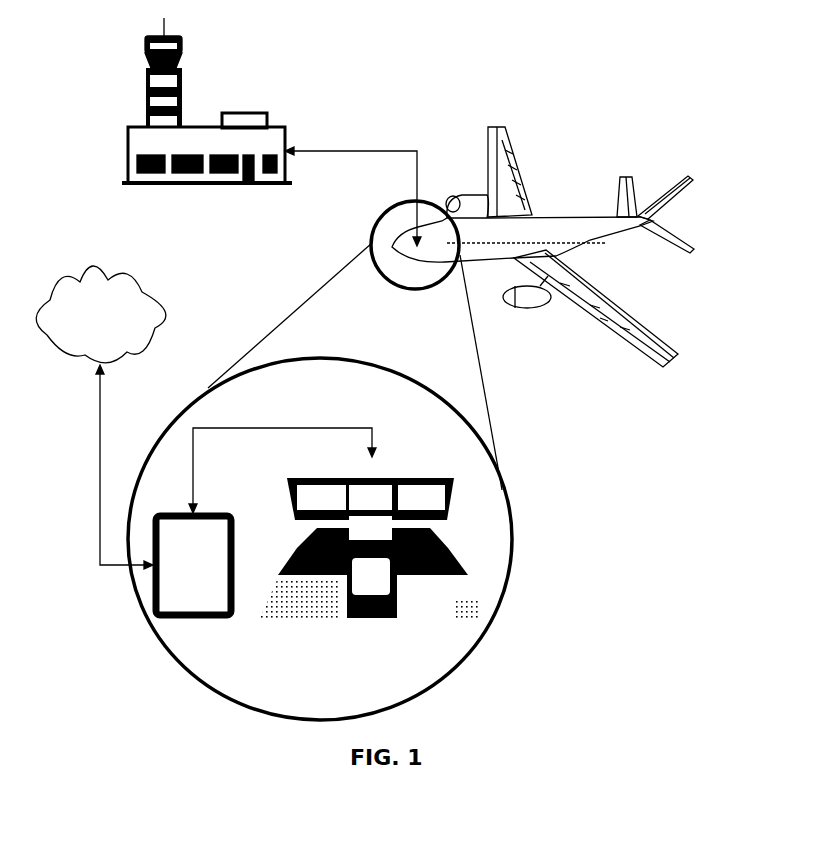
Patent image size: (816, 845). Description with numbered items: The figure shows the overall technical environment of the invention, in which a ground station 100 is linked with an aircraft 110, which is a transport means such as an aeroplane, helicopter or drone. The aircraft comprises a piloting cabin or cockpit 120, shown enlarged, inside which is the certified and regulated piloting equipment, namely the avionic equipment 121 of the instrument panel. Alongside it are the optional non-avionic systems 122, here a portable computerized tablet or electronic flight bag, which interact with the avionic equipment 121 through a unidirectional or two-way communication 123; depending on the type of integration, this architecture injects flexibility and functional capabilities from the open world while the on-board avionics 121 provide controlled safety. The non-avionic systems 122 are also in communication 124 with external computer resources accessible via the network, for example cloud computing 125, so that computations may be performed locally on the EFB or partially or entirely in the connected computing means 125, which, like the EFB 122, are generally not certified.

The ground station / air traffic control facility 100 is at (192, 34).
The aircraft 110 is at (520, 132).
The cockpit 120 is at (383, 213).
The avionic equipment 121 is at (415, 470).
The non-avionic systems 122 is at (212, 505).
The communication 123 is at (277, 425).
The communication 124 is at (102, 462).
The cloud computing 125 is at (118, 268).